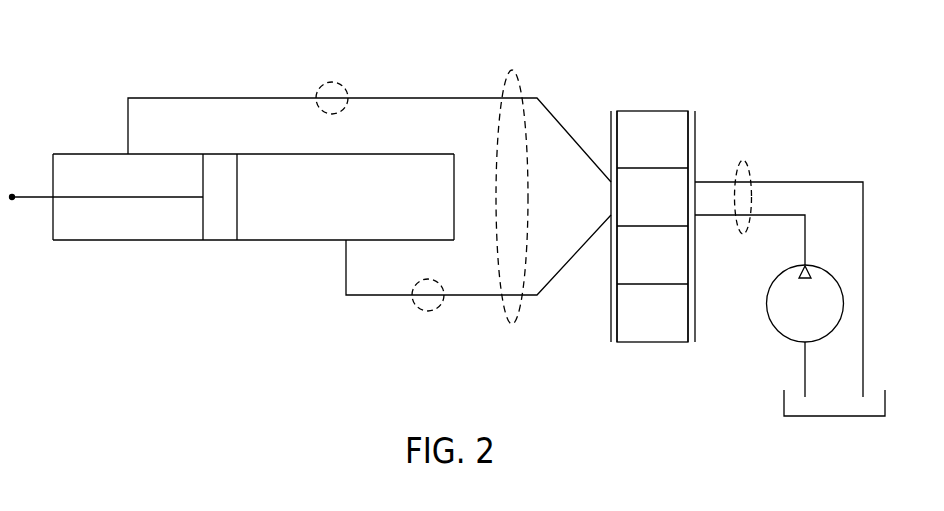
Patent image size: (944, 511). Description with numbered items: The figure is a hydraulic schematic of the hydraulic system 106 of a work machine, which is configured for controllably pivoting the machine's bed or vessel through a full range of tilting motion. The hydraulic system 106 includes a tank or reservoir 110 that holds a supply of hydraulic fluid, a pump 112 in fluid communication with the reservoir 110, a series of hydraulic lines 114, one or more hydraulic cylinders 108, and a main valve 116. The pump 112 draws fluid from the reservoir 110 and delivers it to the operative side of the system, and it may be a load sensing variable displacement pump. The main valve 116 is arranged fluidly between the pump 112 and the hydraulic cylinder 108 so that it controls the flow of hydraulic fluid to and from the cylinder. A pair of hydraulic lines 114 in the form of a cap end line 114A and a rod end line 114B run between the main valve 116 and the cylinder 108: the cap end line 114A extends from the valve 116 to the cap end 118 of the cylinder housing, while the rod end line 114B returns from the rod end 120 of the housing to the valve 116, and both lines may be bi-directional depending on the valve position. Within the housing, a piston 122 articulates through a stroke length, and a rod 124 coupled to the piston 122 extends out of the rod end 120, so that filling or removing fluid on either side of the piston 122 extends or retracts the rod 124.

The hydraulic system 106 is at (773, 50).
The hydraulic cylinder 108 is at (183, 258).
The tank or reservoir 110 is at (832, 417).
The pump 112 is at (765, 300).
The hydraulic lines 114 is at (515, 75).
The cap end line 114A is at (428, 310).
The rod end line 114B is at (335, 82).
The main valve 116 is at (658, 100).
The cap end 118 is at (455, 195).
The rod end 120 is at (52, 178).
The piston 122 is at (217, 163).
The rod 124 is at (107, 197).